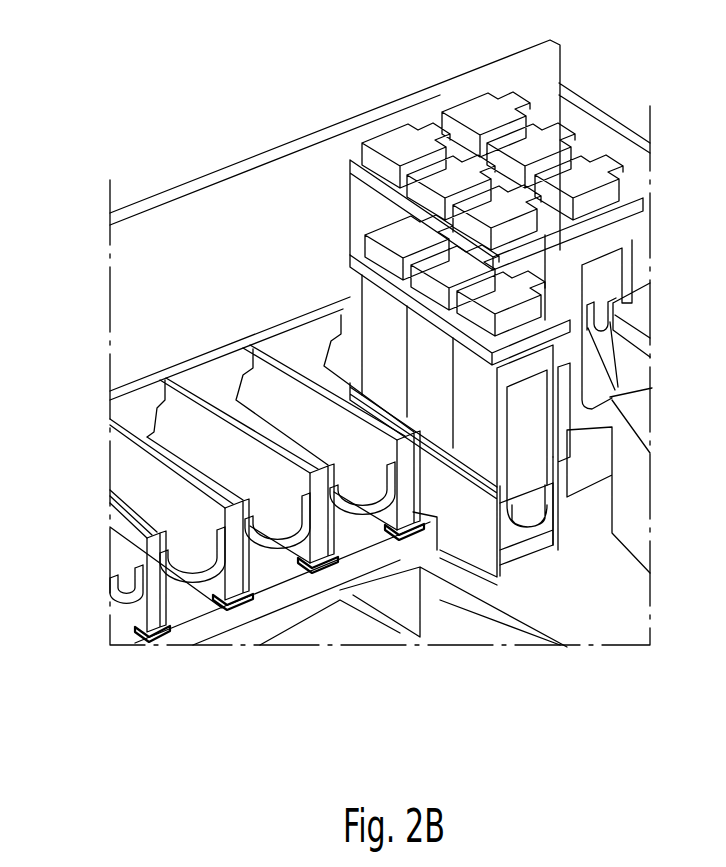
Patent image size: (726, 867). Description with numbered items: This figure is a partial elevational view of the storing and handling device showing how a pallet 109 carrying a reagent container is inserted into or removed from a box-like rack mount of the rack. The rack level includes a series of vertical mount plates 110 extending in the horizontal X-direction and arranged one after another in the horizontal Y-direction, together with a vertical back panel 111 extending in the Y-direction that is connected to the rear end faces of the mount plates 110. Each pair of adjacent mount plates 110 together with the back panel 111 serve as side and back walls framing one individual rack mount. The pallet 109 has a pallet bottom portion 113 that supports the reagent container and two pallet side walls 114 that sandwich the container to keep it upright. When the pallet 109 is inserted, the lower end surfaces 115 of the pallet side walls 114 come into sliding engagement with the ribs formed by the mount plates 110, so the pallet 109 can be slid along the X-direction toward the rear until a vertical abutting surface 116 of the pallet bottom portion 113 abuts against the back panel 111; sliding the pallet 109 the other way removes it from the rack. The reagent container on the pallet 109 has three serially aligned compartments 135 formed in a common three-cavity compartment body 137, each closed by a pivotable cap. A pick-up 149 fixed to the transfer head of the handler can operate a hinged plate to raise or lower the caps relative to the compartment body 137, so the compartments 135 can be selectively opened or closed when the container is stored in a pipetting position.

The pallet 109 is at (367, 513).
The vertical mount plate 110 is at (187, 383).
The back panel 111 is at (223, 352).
The pallet bottom portion 113 is at (531, 538).
The pallet side wall 114 is at (570, 523).
The lower end surface 115 is at (562, 540).
The vertical abutting surface 116 is at (355, 385).
The compartment 135 is at (383, 342).
The compartment body 137 is at (463, 375).
The pick-up 149 is at (650, 302).